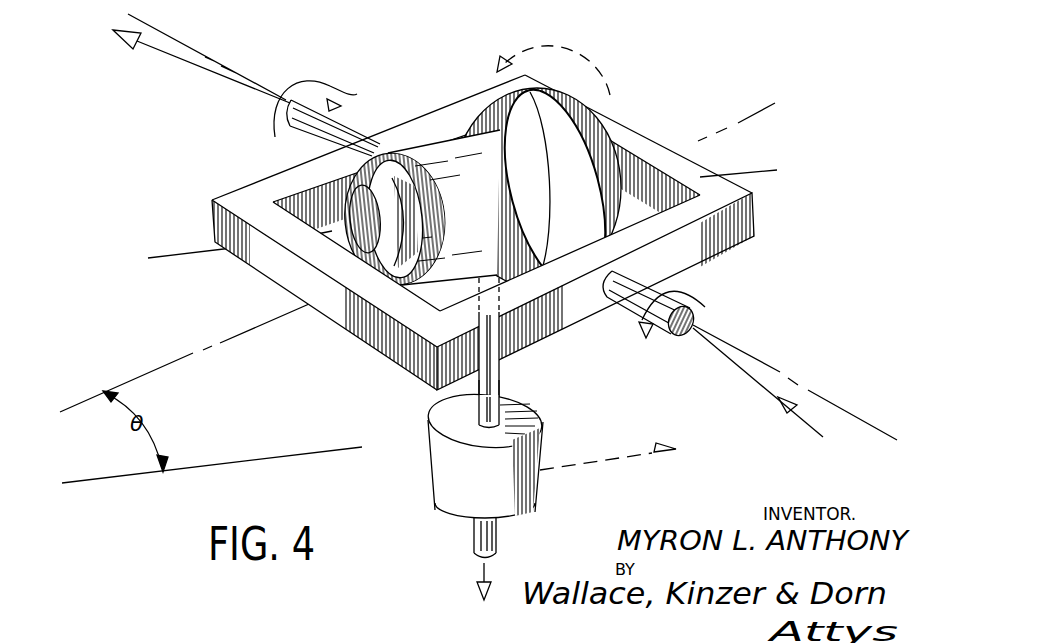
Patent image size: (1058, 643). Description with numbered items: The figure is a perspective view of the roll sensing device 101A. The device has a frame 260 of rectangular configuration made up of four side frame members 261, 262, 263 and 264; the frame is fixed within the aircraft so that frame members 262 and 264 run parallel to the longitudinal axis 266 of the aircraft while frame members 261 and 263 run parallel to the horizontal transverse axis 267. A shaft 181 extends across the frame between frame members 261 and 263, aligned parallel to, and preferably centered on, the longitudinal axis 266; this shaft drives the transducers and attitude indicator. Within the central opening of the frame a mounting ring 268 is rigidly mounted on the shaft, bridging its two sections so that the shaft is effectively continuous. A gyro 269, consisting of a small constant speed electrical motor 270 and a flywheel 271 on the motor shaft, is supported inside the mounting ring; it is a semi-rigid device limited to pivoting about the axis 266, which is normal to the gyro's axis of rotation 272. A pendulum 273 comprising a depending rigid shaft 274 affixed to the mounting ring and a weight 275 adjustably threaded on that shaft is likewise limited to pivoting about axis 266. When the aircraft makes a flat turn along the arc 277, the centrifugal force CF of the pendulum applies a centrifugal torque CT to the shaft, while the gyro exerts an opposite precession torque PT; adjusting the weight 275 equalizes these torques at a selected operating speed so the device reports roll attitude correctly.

The roll sensing device 101A is at (648, 82).
The shaft 181 is at (305, 124).
The frame 260 is at (482, 154).
The side frame member 261 is at (702, 252).
The side frame member 262 is at (641, 134).
The side frame member 263 is at (417, 128).
The side frame member 264 is at (270, 262).
The longitudinal axis 266 is at (747, 360).
The horizontal transverse axis 267 is at (750, 113).
The mounting ring 268 is at (533, 182).
The gyro 269 is at (443, 267).
The constant speed electrical motor 270 is at (366, 219).
The flywheel 271 is at (538, 173).
The axis of rotation 272 is at (150, 258).
The pendulum 273 is at (503, 385).
The depending rigid shaft 274 is at (511, 473).
The weight 275 is at (540, 453).
The arc 277 is at (745, 373).